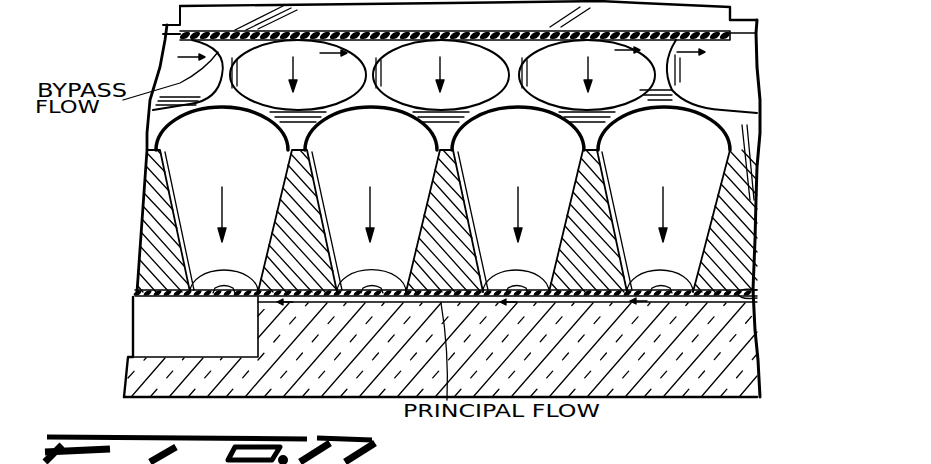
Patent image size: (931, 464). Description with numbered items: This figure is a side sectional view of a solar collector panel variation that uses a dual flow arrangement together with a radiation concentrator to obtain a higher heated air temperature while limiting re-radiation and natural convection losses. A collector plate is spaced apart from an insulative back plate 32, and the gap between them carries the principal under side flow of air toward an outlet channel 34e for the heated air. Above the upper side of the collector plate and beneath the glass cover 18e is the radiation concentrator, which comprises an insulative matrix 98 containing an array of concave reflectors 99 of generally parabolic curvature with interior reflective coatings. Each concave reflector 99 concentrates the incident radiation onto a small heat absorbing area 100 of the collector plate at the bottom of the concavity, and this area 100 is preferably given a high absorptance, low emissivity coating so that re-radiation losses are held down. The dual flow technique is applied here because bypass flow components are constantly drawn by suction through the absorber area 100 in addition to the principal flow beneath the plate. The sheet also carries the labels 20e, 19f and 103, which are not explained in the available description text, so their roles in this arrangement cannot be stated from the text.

The glass cover 18e is at (720, 4).
The concave reflectors 99 is at (722, 170).
The insulative matrix 98 is at (738, 206).
The heat absorbing area 100 is at (700, 268).
The inner plate 20e is at (757, 297).
The insulative back plate 32 is at (747, 353).
The outlet channel 34e is at (199, 340).
The bypass duct 19f is at (468, 449).
The passage 103 is at (576, 456).